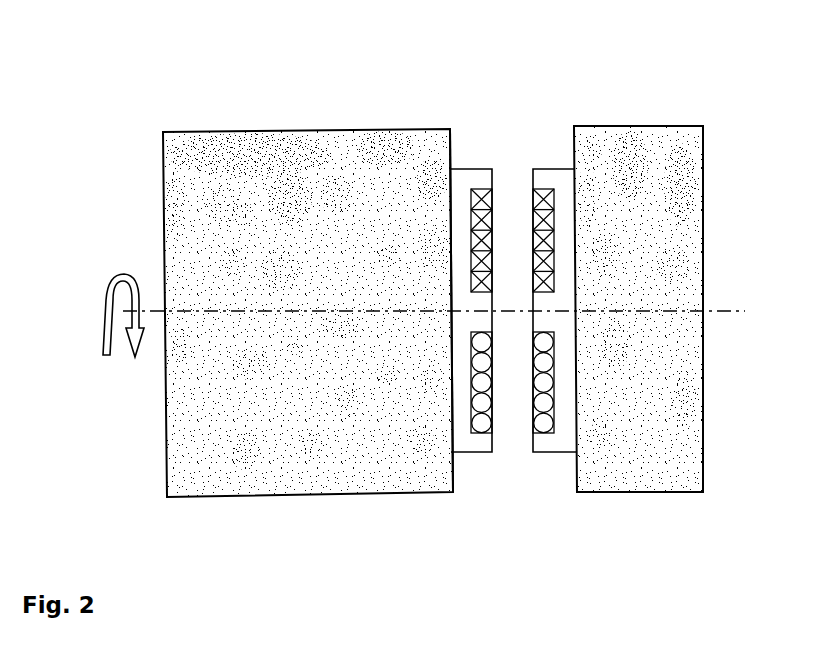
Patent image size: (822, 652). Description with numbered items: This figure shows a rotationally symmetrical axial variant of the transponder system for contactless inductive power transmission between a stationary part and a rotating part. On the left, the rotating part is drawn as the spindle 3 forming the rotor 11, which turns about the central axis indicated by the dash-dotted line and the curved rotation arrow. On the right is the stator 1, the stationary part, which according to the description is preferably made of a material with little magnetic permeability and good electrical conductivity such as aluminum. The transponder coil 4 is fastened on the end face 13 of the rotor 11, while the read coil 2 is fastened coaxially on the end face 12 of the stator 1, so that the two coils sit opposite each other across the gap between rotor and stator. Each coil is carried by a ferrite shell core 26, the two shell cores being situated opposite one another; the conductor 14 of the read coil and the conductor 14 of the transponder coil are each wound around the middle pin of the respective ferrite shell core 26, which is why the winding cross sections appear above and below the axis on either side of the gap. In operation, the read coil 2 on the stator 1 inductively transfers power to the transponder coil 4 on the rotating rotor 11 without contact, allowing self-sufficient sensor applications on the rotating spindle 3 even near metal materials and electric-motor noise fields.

The stator 1 is at (697, 203).
The read coil 2 is at (547, 175).
The spindle 3 is at (308, 338).
The transponder coil 4 is at (489, 176).
The rotor 11 is at (286, 465).
The end face of the stator 12 is at (594, 479).
The end face of the rotor 13 is at (456, 133).
The conductor 14 is at (545, 420).
The ferrite shell core 26 is at (519, 461).